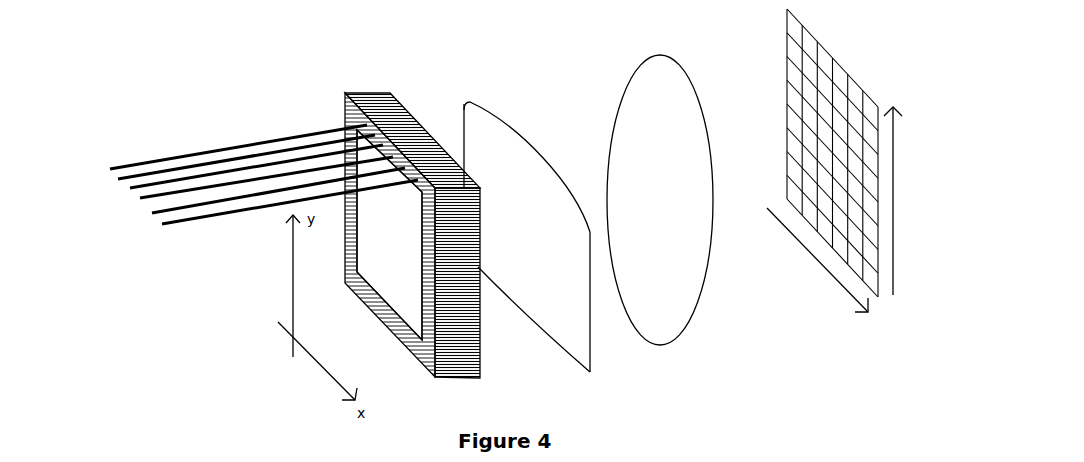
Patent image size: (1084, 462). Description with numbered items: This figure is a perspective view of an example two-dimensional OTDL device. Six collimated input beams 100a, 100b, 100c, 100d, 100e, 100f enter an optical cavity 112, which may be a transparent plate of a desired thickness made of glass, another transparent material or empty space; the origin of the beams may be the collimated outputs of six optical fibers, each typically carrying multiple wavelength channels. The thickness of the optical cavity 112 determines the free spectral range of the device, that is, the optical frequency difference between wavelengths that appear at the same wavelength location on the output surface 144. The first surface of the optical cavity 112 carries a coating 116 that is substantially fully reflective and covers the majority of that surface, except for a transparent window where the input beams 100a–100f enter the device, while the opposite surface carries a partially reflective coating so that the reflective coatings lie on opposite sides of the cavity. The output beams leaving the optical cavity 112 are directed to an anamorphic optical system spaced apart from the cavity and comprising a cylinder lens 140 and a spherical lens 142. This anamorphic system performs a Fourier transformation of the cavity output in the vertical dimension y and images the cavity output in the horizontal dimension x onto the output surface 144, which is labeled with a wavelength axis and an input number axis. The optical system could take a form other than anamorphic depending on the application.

The collimated input beam 100a is at (222, 151).
The collimated input beam 100b is at (231, 162).
The collimated input beam 100c is at (240, 172).
The collimated input beam 100d is at (250, 184).
The collimated input beam 100e is at (262, 196).
The collimated input beam 100f is at (274, 207).
The optical cavity 112 is at (414, 235).
The coating 116 is at (389, 235).
The cylinder lens 140 is at (527, 237).
The spherical lens 142 is at (660, 200).
The output surface 144 is at (838, 165).